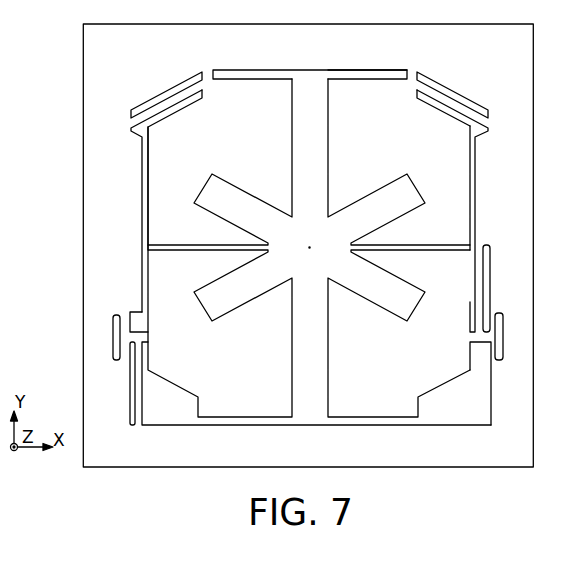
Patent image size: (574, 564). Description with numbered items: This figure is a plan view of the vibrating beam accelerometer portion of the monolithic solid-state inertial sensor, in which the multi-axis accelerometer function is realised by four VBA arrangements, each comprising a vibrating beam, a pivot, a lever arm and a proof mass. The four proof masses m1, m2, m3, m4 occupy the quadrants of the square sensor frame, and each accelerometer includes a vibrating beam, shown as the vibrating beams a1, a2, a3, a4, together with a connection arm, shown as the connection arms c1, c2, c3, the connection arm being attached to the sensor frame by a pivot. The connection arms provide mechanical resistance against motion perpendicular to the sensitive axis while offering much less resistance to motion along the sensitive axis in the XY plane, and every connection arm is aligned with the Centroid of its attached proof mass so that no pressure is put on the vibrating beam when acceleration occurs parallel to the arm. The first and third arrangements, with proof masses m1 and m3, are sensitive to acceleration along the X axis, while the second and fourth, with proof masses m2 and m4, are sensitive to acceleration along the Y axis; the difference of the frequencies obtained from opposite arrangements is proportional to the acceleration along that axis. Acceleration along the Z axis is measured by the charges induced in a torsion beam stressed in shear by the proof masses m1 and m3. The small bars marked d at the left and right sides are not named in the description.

The proof mass m1 is at (220, 162).
The proof mass m2 is at (220, 331).
The proof mass m3 is at (399, 162).
The proof mass m4 is at (316, 335).
The vibrating beam a1 is at (166, 192).
The vibrating beam a2 is at (145, 383).
The vibrating beam a3 is at (452, 202).
The vibrating beam a4 is at (480, 288).
The connection arm c1 is at (349, 247).
The connection arm c2 is at (152, 331).
The connection arm c3 is at (370, 86).
The drive electrode d is at (306, 325).
The centroid Centroid is at (251, 298).